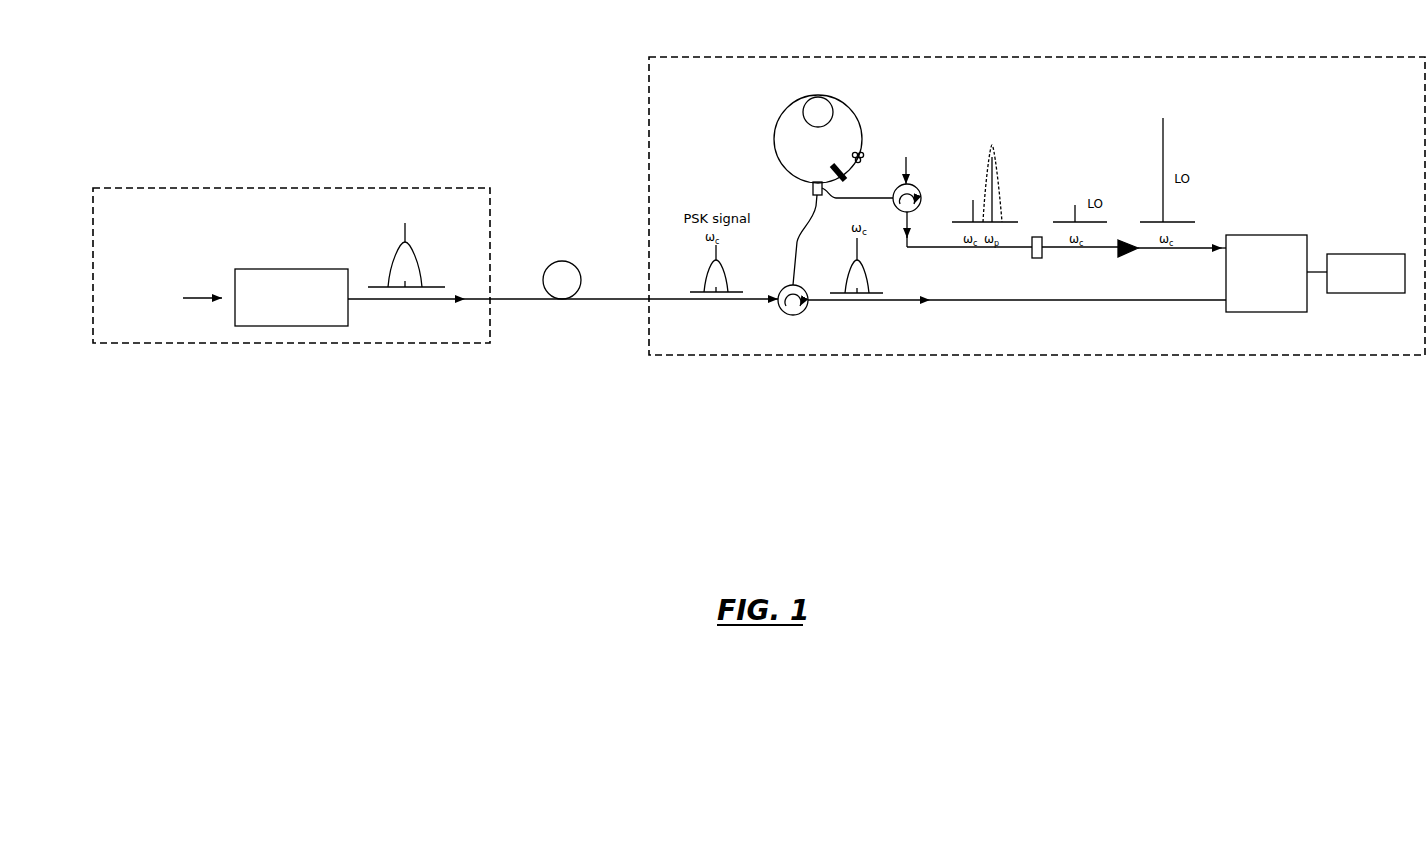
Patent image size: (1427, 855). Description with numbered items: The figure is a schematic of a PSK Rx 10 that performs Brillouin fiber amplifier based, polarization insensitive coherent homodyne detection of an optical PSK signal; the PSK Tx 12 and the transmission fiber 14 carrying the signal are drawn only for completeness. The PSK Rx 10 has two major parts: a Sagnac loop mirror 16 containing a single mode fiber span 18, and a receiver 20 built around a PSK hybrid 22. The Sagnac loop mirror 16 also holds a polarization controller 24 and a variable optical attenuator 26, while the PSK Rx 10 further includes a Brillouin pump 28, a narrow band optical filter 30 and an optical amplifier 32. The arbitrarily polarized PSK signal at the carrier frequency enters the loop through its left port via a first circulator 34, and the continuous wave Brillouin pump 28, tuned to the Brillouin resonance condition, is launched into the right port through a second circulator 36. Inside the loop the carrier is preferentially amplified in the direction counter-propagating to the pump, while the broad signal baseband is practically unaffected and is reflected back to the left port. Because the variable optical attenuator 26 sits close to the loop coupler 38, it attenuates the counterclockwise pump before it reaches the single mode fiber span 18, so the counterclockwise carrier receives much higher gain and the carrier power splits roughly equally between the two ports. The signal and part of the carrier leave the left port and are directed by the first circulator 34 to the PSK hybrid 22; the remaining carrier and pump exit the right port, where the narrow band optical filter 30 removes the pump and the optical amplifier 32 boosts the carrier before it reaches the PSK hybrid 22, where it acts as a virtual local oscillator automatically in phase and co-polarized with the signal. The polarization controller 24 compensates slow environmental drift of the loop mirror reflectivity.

The PSK Rx 10 is at (1048, 57).
The PSK Tx 12 is at (300, 188).
The transmission fiber 14 is at (571, 204).
The Sagnac loop mirror 16 is at (867, 89).
The single mode fiber span 18 is at (826, 65).
The receiver 20 is at (1321, 221).
The PSK hybrid 22 is at (1250, 234).
The polarization controller 24 is at (866, 139).
The variable optical attenuator 26 is at (806, 147).
The Brillouin pump 28 is at (944, 117).
The narrow band optical filter 30 is at (1038, 219).
The optical amplifier 32 is at (1128, 288).
The first circulator 34 is at (793, 284).
The second circulator 36 is at (916, 225).
The loop coupler 38 is at (813, 185).